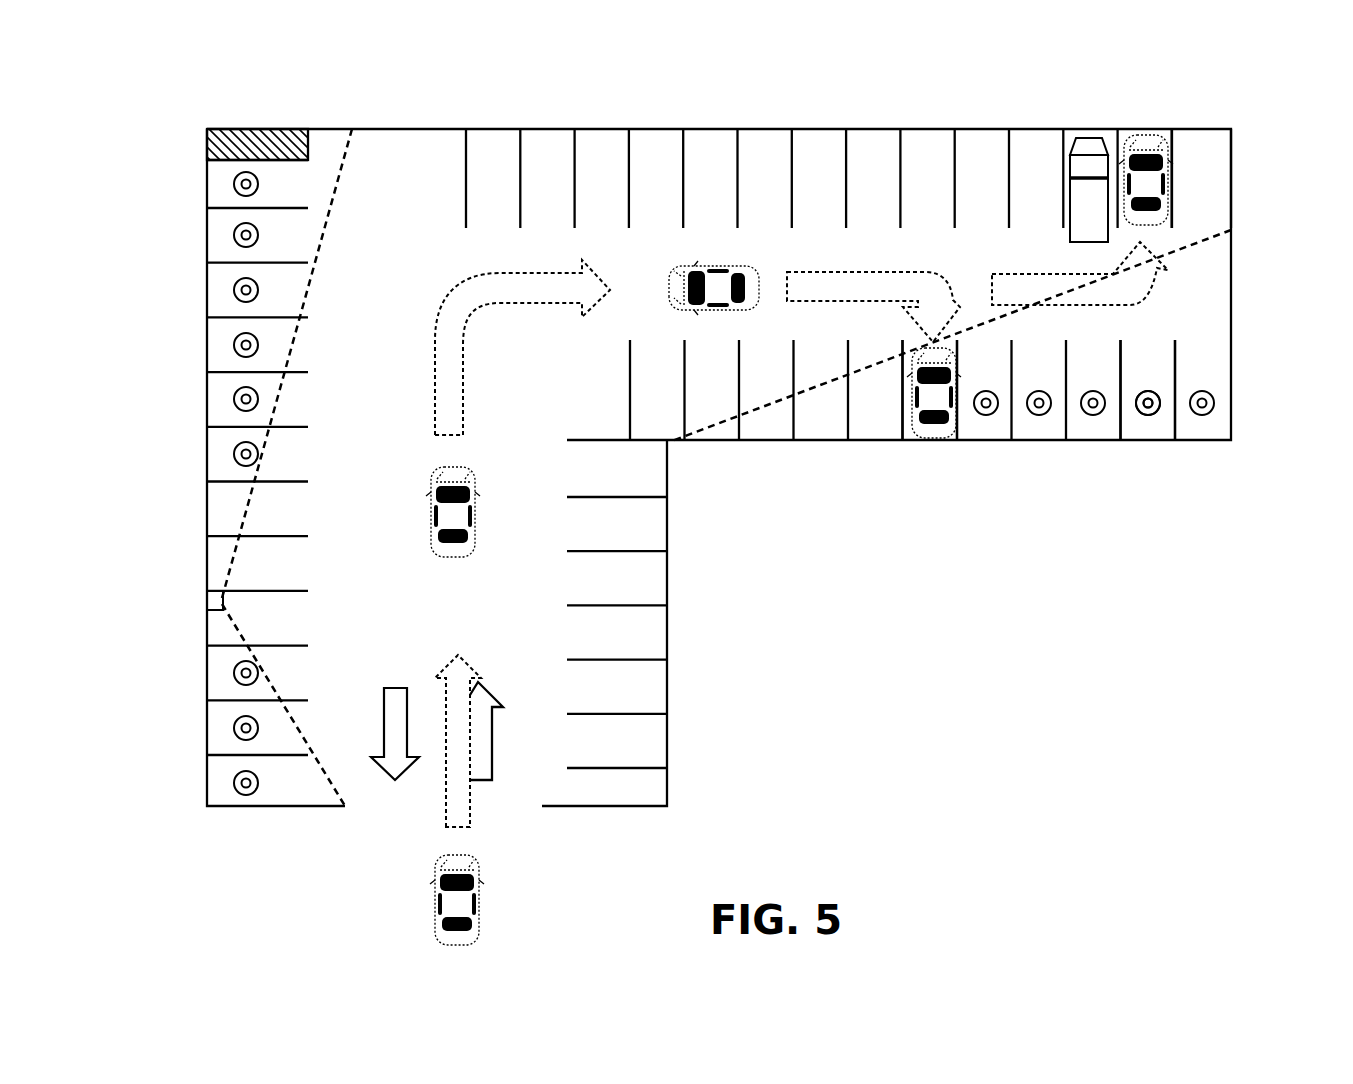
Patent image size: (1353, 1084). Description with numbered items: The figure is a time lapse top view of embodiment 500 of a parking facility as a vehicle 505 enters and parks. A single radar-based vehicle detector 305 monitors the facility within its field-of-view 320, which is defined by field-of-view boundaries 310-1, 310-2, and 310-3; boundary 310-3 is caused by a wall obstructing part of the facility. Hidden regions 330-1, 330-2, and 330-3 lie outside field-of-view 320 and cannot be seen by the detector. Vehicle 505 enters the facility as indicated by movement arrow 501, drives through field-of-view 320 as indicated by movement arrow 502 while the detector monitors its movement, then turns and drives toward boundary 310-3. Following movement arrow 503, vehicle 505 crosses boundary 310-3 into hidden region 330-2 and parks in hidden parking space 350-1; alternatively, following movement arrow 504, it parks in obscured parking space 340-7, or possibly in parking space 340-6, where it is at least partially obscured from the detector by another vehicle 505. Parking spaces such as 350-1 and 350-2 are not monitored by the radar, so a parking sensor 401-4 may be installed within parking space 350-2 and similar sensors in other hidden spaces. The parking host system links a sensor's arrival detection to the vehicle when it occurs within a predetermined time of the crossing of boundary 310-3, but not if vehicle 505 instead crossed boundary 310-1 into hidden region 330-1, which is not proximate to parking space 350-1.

The embodiment of a parking facility 500 is at (146, 98).
The radar-based vehicle detector 305 is at (207, 598).
The field-of-view boundary 310-1 is at (338, 182).
The field-of-view boundary 310-2 is at (322, 772).
The field-of-view boundary 310-3 is at (1197, 240).
The field-of-view 320 is at (470, 598).
The hidden region 330-1 is at (318, 196).
The hidden region 330-2 is at (1136, 334).
The hidden region 330-3 is at (318, 799).
The parking space 340-6 is at (1218, 163).
The parking space 340-7 is at (1165, 135).
The parking space 350-1 is at (913, 434).
The parking space 350-2 is at (1150, 430).
The parking sensor 401-4 is at (1145, 410).
The movement arrow 501 is at (470, 807).
The movement arrow 502 is at (563, 301).
The movement arrow 503 is at (870, 294).
The movement arrow 504 is at (1128, 301).
The vehicle 505 is at (475, 528).